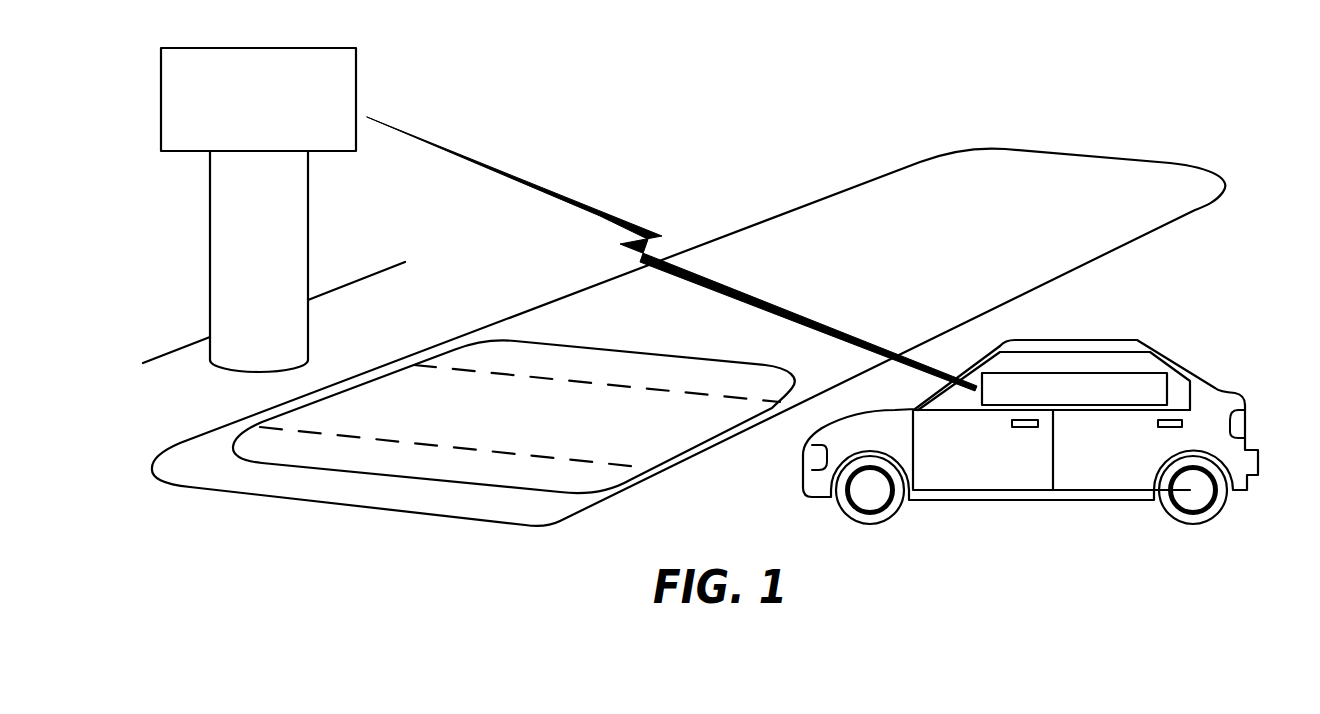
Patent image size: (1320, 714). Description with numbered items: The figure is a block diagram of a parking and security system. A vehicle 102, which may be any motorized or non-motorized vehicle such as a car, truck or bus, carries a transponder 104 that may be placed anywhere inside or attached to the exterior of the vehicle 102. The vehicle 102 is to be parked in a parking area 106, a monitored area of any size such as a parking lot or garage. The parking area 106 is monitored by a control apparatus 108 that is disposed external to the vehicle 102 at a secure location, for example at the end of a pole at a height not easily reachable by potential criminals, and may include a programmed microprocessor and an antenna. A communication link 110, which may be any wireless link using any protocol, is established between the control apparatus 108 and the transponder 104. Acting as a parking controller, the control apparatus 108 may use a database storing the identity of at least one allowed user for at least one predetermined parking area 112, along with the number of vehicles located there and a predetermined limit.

The vehicle 102 is at (1085, 340).
The transponder 104 is at (1133, 373).
The parking area 106 is at (692, 438).
The control apparatus 108 is at (328, 48).
The communication link 110 is at (528, 182).
The predetermined parking area 112 is at (1135, 238).